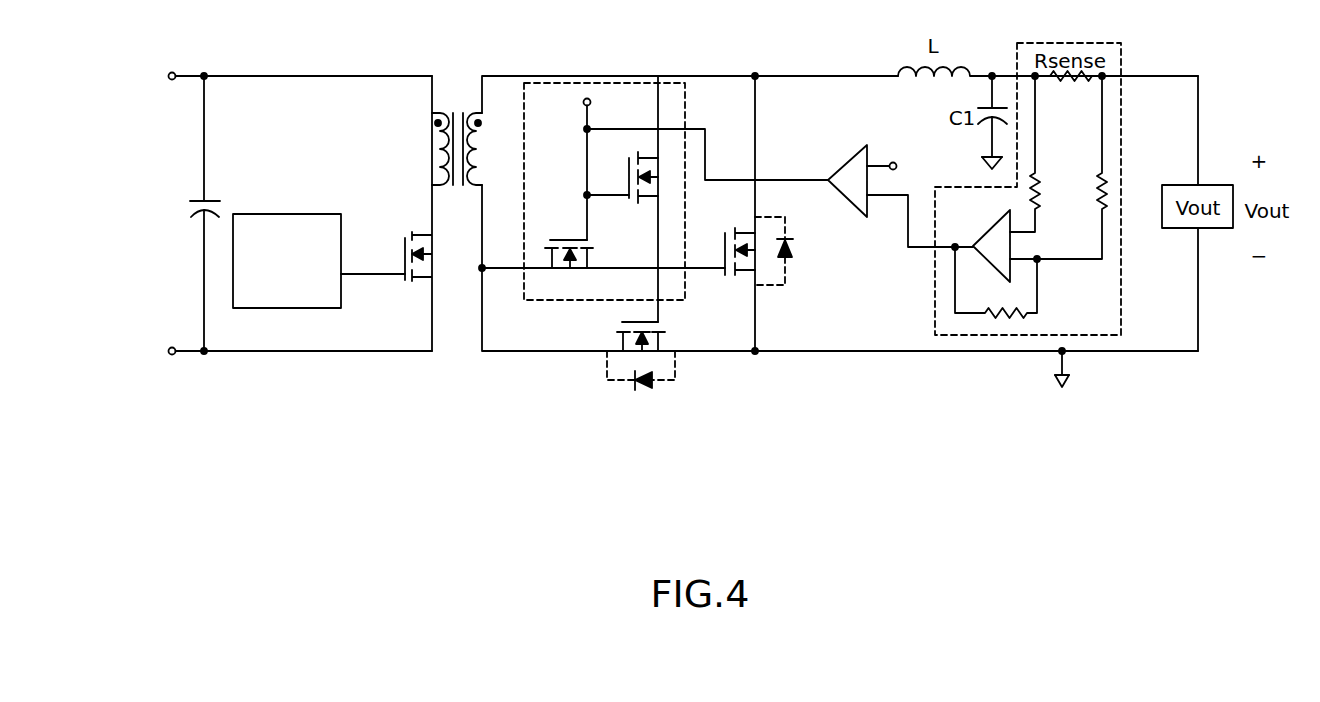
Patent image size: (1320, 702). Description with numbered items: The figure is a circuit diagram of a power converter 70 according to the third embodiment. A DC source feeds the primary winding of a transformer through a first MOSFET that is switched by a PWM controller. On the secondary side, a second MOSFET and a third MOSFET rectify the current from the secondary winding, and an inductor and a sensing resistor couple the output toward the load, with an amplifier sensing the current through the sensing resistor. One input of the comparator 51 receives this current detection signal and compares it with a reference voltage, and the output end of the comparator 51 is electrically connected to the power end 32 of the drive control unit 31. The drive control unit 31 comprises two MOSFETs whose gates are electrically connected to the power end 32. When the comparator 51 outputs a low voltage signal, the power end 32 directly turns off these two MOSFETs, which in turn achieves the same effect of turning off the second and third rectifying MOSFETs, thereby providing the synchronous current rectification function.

The drive control unit 31 is at (685, 107).
The power end 32 is at (585, 98).
The comparator 51 is at (848, 202).
The power converter 70 is at (272, 424).